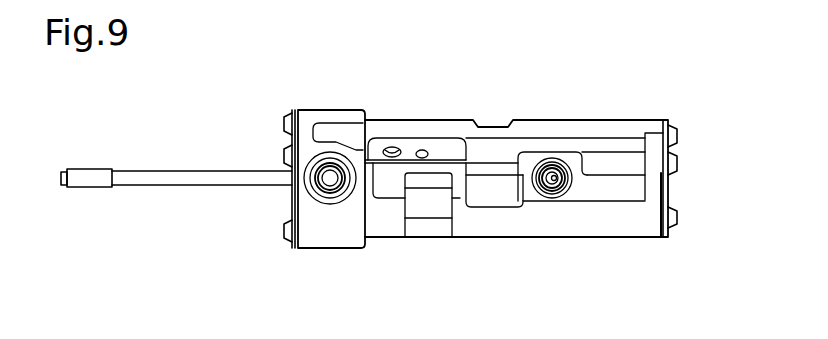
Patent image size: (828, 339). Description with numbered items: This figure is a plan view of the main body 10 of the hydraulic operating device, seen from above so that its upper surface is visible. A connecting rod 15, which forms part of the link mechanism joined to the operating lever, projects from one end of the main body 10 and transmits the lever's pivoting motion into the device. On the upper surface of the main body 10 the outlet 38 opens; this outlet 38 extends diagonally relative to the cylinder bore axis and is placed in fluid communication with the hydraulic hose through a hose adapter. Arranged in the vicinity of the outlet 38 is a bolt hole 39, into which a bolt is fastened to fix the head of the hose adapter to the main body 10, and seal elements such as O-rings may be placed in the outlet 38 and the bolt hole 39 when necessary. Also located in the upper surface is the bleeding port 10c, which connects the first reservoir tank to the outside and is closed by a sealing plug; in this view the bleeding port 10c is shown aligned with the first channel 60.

The connecting rod 15 is at (169, 180).
The main body 10 is at (388, 225).
The bolt hole 39 is at (392, 148).
The outlet 38 is at (422, 150).
The bleeding port 10c is at (558, 152).
The first channel 60 is at (552, 180).